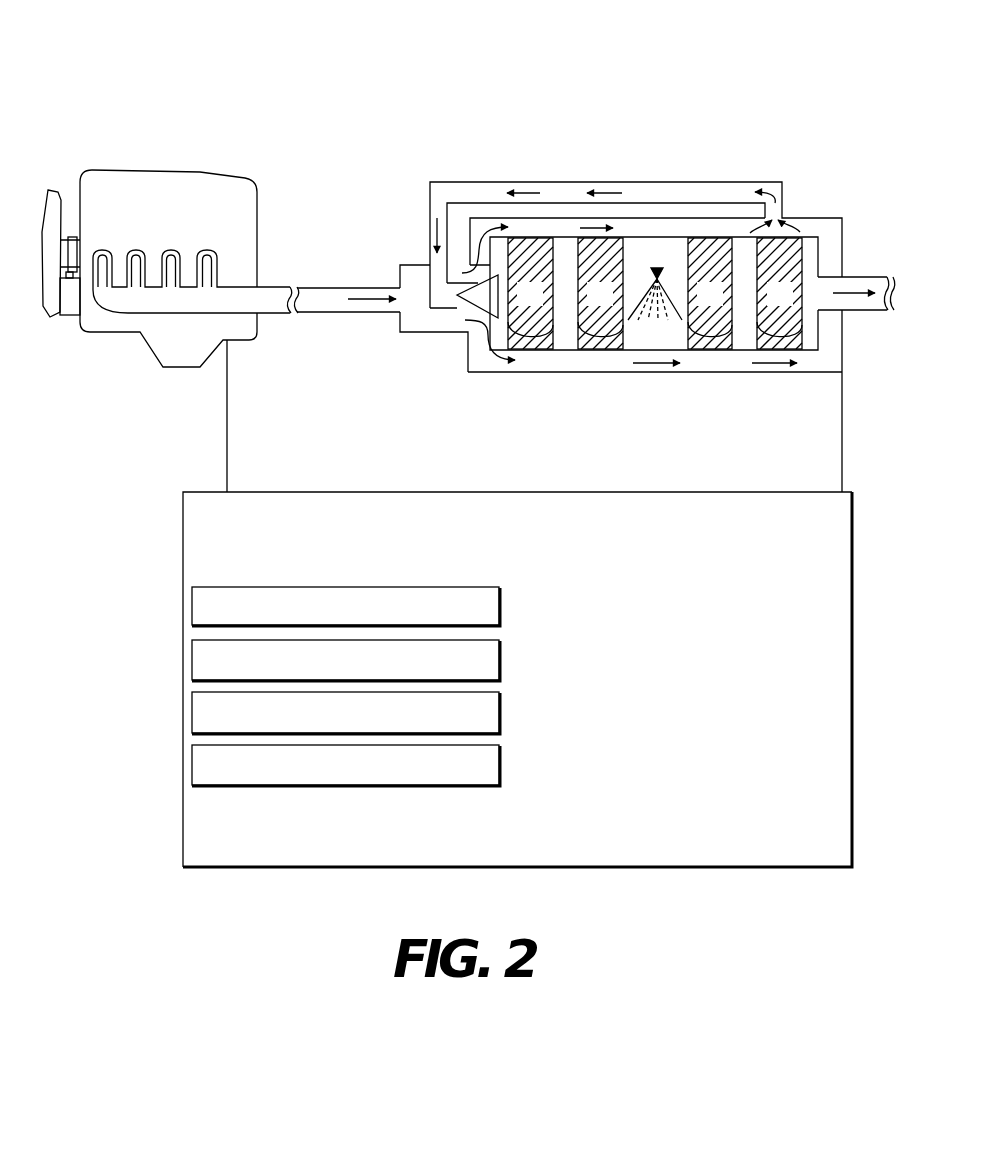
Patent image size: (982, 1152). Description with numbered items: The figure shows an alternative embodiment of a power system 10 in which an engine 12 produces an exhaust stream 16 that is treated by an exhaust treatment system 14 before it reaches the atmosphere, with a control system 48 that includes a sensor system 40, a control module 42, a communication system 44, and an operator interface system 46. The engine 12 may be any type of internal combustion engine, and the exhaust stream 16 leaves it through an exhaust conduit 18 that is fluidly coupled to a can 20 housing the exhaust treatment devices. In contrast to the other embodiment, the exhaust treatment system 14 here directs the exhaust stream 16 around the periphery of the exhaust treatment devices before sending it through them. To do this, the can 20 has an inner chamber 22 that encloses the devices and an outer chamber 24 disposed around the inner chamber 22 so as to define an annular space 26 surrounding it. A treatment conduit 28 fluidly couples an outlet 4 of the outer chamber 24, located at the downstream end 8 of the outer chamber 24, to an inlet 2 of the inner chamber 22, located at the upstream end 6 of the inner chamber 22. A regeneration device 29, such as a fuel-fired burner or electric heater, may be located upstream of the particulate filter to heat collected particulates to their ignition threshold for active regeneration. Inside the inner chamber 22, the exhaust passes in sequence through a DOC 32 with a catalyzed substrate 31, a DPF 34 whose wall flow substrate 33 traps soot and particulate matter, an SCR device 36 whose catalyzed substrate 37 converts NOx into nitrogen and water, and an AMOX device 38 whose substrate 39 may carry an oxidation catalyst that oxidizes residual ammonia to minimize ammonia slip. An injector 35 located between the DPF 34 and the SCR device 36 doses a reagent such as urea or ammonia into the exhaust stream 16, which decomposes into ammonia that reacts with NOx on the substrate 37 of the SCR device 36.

The inlet 2 is at (455, 307).
The outlet 4 is at (783, 203).
The upstream end 6 is at (452, 365).
The downstream end 8 is at (855, 203).
The power system 10 is at (157, 498).
The engine 12 is at (128, 312).
The exhaust treatment system 14 is at (623, 58).
The exhaust stream 16 is at (352, 298).
The exhaust conduit 18 is at (380, 312).
The can 20 is at (555, 375).
The inner chamber 22 is at (817, 353).
The outer chamber 24 is at (758, 373).
The annular space 26 is at (728, 367).
The treatment conduit 28 is at (563, 195).
The regeneration device 29 is at (470, 373).
The substrate 31 is at (530, 337).
The DOC 32 is at (541, 304).
The wall flow substrate 33 is at (602, 343).
The DPF 34 is at (611, 304).
The injector 35 is at (657, 323).
The SCR device 36 is at (721, 304).
The catalyzed substrate 37 is at (708, 340).
The AMOX device 38 is at (791, 304).
The substrate 39 is at (782, 345).
The sensor system 40 is at (500, 602).
The control module 42 is at (500, 652).
The communication system 44 is at (500, 706).
The operator interface system 46 is at (500, 762).
The control system 48 is at (849, 512).